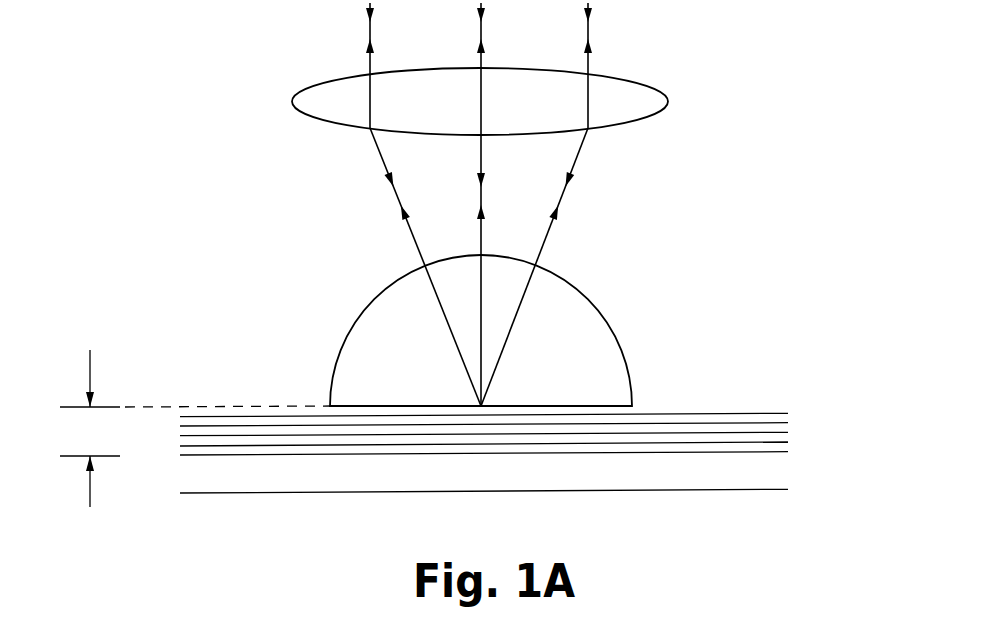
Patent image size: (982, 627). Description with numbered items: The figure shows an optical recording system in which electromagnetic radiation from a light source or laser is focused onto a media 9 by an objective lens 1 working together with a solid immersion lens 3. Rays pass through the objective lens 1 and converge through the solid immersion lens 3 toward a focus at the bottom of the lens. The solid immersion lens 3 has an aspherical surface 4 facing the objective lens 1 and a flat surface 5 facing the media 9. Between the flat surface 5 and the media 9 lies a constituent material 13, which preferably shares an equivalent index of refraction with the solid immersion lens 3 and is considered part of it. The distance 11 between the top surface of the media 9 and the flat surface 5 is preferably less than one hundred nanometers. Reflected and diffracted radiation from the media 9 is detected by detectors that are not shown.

The objective lens 1 is at (630, 93).
The aspherical surface 4 is at (597, 300).
The solid immersion lens 3 is at (578, 357).
The flat surface 5 is at (597, 405).
The constituent material 13 is at (775, 432).
The media 9 is at (768, 478).
The distance 11 is at (90, 428).